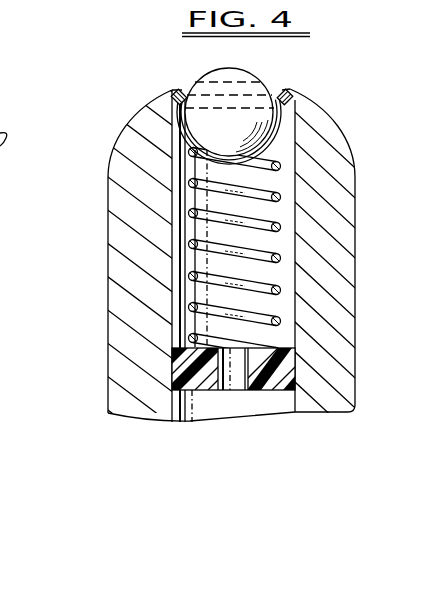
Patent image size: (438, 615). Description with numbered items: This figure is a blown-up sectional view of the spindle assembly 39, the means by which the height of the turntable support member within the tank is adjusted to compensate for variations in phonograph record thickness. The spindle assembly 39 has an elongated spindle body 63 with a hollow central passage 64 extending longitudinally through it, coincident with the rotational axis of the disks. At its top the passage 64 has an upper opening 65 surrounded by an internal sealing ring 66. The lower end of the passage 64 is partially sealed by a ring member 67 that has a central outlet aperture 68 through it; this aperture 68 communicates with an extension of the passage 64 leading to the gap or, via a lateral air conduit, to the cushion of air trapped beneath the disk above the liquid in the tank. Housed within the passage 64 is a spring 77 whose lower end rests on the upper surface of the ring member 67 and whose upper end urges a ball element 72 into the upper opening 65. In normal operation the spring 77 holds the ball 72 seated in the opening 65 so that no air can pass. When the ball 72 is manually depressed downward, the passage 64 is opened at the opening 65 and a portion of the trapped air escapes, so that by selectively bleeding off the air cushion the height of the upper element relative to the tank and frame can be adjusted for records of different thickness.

The spindle assembly 39 is at (352, 131).
The spindle body 63 is at (345, 223).
The hollow central passage 64 is at (283, 157).
The upper opening 65 is at (263, 100).
The internal sealing ring 66 is at (283, 97).
The ring member 67 is at (283, 363).
The central outlet aperture 68 is at (247, 389).
The ball element 72 is at (192, 121).
The spring 77 is at (193, 277).